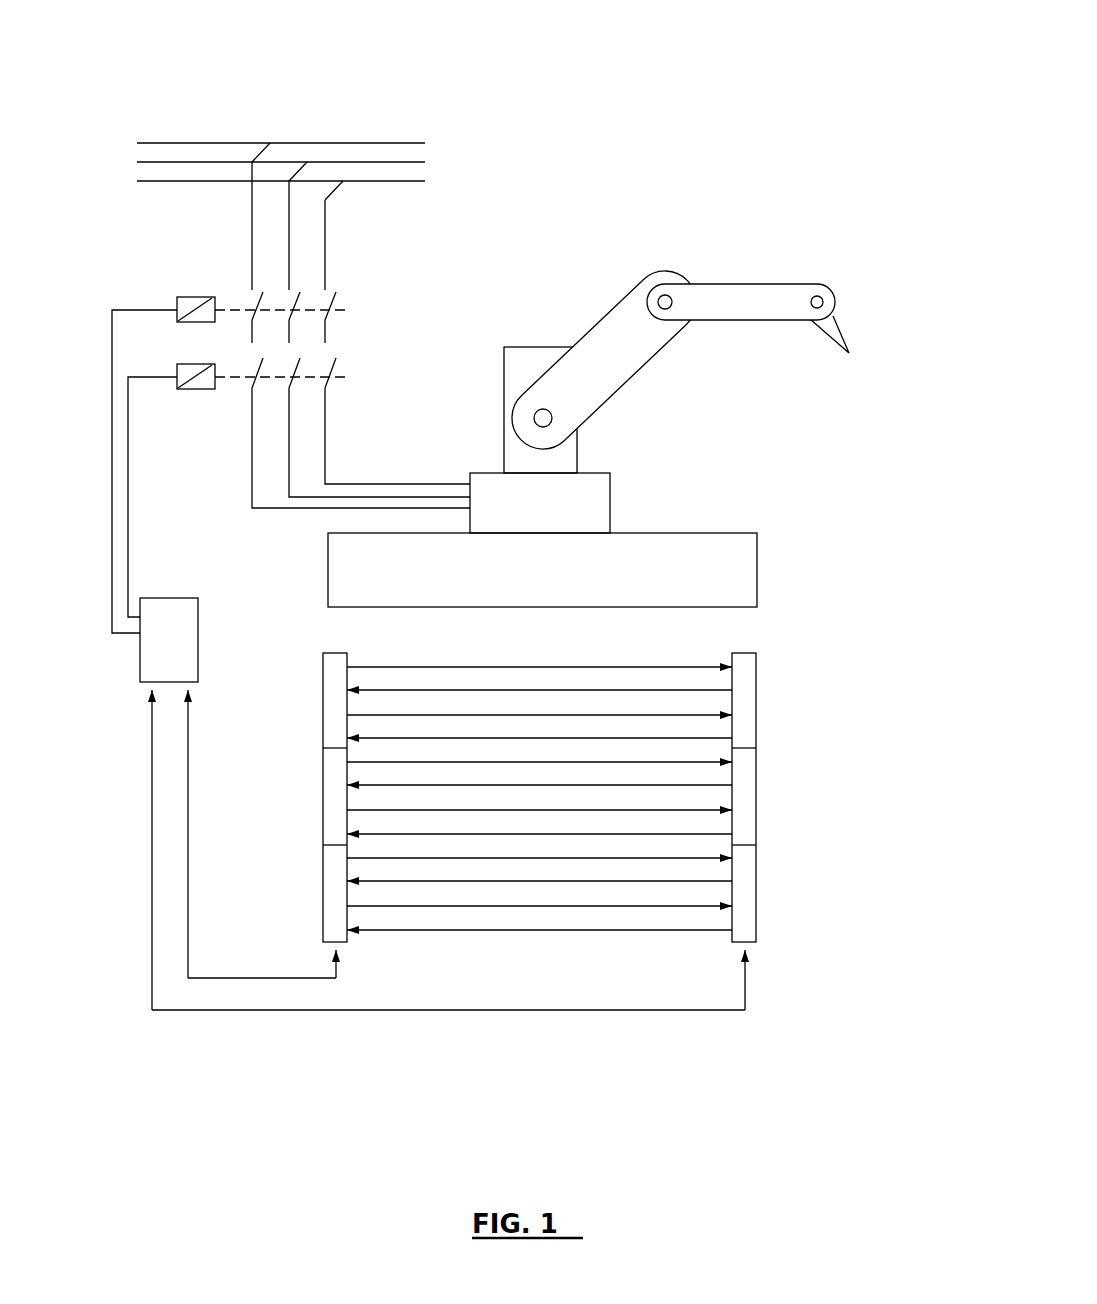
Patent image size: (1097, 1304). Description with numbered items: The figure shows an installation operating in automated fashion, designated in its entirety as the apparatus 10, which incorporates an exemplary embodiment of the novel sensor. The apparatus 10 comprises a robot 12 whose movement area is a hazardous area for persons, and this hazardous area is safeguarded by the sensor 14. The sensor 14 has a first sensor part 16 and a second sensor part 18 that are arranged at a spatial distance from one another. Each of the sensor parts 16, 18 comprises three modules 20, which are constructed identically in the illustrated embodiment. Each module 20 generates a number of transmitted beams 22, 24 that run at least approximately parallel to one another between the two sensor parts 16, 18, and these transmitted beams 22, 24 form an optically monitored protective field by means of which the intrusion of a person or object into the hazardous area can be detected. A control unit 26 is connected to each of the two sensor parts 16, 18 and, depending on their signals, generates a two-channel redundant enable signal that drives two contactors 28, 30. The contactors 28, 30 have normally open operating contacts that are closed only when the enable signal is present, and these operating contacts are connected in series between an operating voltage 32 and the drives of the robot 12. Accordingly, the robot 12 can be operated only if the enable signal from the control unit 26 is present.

The apparatus 10 is at (728, 108).
The robot 12 is at (617, 362).
The sensor 14 is at (544, 857).
The first sensor part 16 is at (321, 864).
The second sensor part 18 is at (757, 922).
The module 20 is at (340, 777).
The transmitted beam 22 is at (460, 932).
The transmitted beam 24 is at (598, 903).
The control unit 26 is at (140, 662).
The contactor 28 is at (190, 389).
The contactor 30 is at (197, 296).
The operating voltage 32 is at (400, 143).